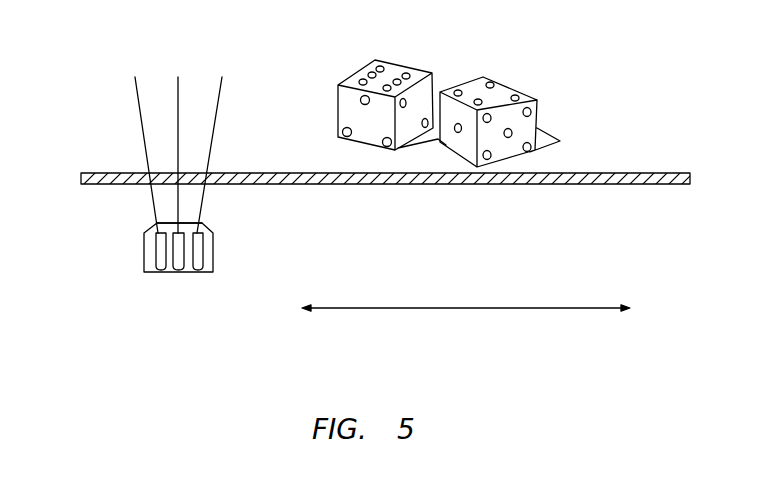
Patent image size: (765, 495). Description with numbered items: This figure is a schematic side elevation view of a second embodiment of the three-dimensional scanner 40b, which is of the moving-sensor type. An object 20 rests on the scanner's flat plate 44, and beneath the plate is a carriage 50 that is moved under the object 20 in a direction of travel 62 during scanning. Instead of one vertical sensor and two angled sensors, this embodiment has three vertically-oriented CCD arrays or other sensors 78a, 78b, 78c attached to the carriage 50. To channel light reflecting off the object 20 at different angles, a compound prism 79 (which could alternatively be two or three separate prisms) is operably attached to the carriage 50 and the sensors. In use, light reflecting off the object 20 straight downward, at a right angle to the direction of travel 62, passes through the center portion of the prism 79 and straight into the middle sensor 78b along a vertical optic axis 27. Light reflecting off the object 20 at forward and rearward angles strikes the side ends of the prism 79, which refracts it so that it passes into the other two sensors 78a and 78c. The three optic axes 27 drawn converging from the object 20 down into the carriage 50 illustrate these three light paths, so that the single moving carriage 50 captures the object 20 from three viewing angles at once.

The object 20 is at (530, 123).
The optic axis 27 is at (135, 77).
The transparent plate / table surface 44 is at (627, 185).
The carriage 50 is at (130, 249).
The direction of travel 62 is at (425, 309).
The sensor 78a is at (153, 281).
The middle sensor 78b is at (174, 284).
The sensor 78c is at (202, 283).
The compound prism 79 is at (220, 226).
The 3-D scanner 40b is at (90, 377).